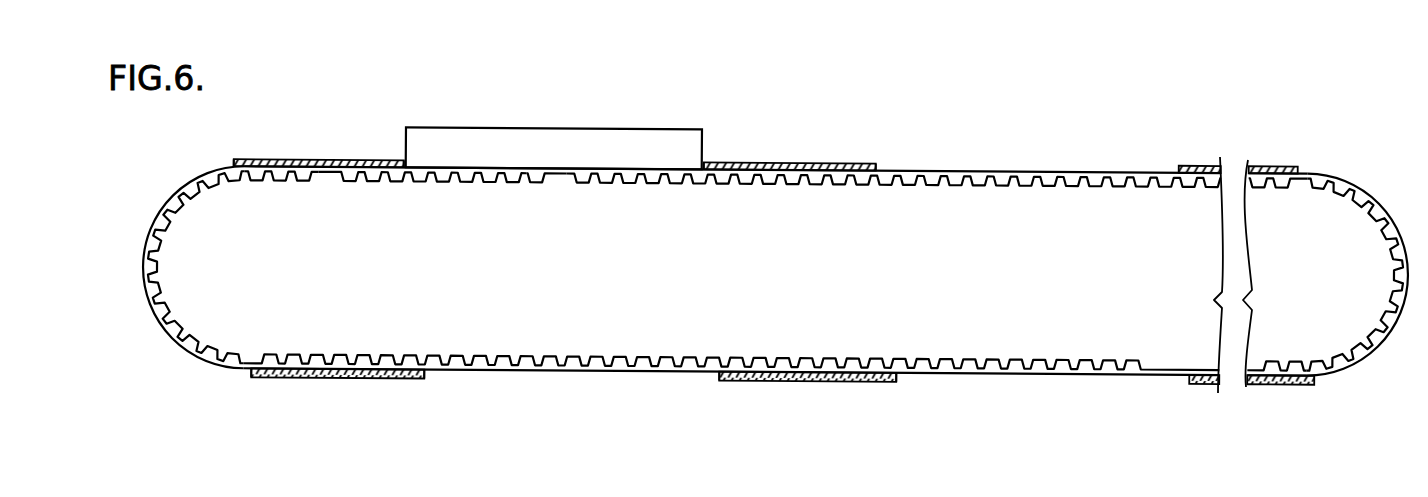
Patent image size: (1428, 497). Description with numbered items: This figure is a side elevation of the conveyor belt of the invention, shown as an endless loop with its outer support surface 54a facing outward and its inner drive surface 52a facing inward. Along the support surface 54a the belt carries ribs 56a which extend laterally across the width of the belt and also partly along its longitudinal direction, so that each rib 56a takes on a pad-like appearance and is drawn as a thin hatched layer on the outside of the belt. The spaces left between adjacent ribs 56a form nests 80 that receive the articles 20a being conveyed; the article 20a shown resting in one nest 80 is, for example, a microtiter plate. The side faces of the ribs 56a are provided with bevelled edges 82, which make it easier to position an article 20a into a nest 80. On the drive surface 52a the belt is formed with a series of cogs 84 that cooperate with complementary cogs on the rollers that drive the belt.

The nests 80 is at (1130, 172).
The support surface 54a is at (982, 173).
The drive surface 52a is at (1016, 185).
The cogs 84 is at (250, 183).
The ribs 56a is at (346, 165).
The bevelled edges 82 is at (232, 163).
The article 20a is at (600, 130).